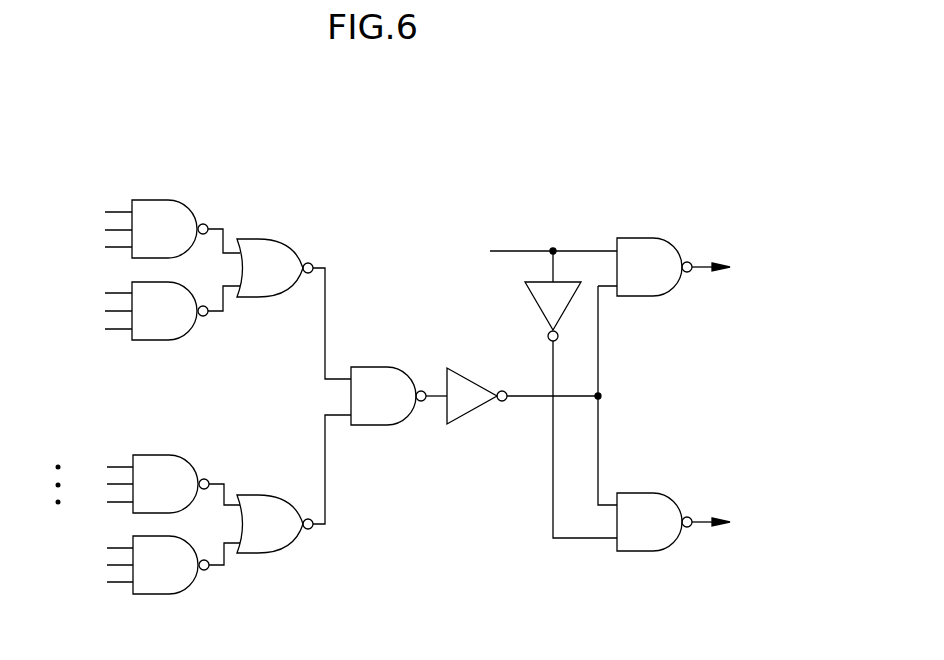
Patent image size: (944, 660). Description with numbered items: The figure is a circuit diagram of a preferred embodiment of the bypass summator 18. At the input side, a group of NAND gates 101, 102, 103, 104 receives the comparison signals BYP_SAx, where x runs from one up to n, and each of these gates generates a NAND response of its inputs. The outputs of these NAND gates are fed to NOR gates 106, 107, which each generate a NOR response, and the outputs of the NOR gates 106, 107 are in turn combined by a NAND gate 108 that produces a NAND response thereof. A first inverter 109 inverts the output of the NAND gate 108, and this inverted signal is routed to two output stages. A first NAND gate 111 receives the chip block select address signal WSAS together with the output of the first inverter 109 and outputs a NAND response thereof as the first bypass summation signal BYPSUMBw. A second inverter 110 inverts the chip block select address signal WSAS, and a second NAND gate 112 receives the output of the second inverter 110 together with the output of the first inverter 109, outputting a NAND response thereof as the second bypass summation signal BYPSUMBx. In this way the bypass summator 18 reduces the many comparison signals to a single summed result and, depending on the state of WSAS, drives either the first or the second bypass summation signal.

The bypass summator 18 is at (263, 153).
The NAND gate 101 is at (162, 215).
The NAND gate 102 is at (170, 325).
The NAND gate 103 is at (163, 468).
The NAND gate 104 is at (175, 582).
The NOR gate 106 is at (263, 255).
The NOR gate 107 is at (274, 543).
The NAND gate 108 is at (373, 380).
The first inverter 109 is at (468, 390).
The second inverter 110 is at (543, 297).
The first NAND gate 111 is at (645, 252).
The second NAND gate 112 is at (645, 508).